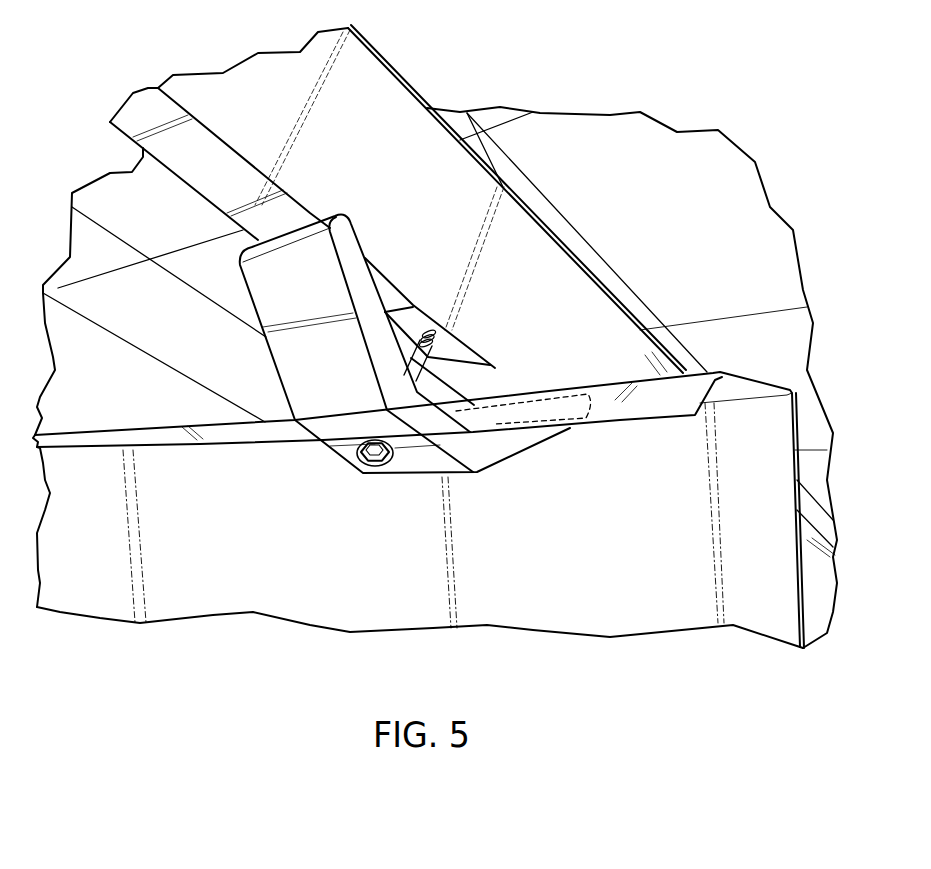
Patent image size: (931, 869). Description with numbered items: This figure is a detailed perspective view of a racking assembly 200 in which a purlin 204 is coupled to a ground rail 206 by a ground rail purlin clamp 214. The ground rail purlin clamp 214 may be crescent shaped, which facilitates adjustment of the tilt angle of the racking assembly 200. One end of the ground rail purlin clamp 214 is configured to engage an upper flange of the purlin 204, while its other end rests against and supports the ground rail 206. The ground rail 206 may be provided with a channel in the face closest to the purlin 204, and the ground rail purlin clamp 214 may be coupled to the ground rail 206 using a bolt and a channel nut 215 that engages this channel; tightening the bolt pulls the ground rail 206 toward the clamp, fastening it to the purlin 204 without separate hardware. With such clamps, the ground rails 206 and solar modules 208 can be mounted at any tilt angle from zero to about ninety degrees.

The racking assembly 200 is at (141, 79).
The purlin 204 is at (227, 444).
The ground rail 206 is at (500, 190).
The solar module 208 is at (108, 190).
The ground rail purlin clamp 214 is at (344, 469).
The channel nut 215 is at (388, 467).